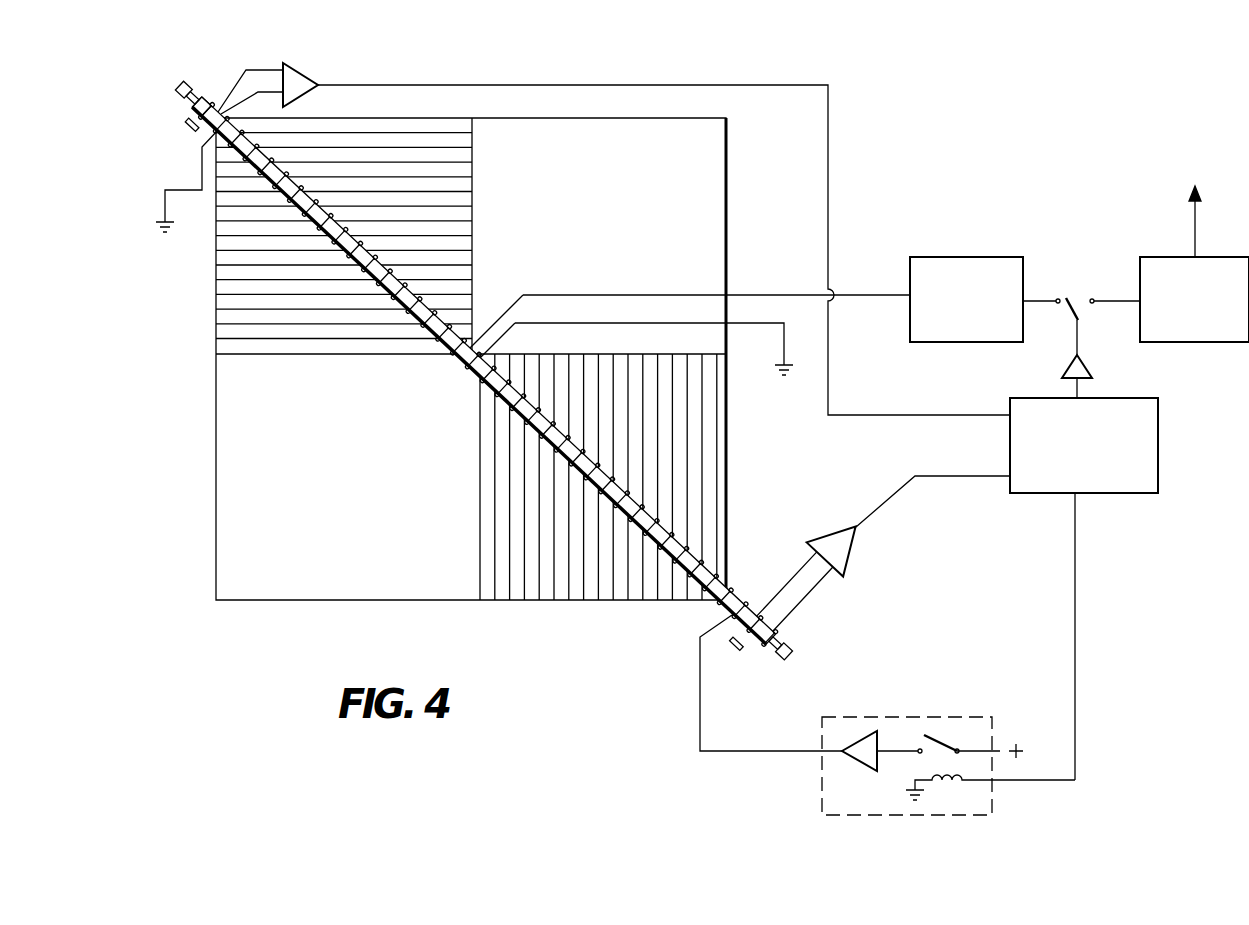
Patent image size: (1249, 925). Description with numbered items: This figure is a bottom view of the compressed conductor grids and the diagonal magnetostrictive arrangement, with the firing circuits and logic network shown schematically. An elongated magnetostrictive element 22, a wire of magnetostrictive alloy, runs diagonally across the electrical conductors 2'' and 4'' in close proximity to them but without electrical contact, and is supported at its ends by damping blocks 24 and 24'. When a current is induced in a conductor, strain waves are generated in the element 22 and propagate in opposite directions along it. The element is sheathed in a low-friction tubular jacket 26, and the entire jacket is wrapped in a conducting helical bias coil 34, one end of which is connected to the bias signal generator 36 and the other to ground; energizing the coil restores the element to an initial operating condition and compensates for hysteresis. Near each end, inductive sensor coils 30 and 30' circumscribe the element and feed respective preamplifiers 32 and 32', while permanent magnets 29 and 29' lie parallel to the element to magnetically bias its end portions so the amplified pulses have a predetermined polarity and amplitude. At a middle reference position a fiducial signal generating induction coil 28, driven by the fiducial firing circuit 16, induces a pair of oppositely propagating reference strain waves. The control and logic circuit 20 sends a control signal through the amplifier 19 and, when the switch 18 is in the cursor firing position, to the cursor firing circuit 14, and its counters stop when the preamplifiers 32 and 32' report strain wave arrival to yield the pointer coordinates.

The cursor firing circuit 14 is at (1190, 343).
The fiducial firing circuit 16 is at (976, 258).
The switch 18 is at (1062, 310).
The amplifier 19 is at (1090, 367).
The control and logic circuit 20 is at (1134, 484).
The magnetostrictive element 22 is at (772, 644).
The damping block 24 is at (812, 659).
The damping block 24' is at (160, 78).
The jacket or sleeve 26 is at (700, 590).
The fiducial signal generating induction coil 28 is at (460, 366).
The permanent magnet 29 is at (727, 667).
The permanent magnet 29' is at (169, 142).
The inductive sensor coil 30 is at (518, 370).
The inductive sensor coil 30' is at (213, 87).
The preamplifier 32 is at (878, 558).
The preamplifier 32' is at (614, 236).
The helical bias coil 34 is at (628, 518).
The bias signal generator 36 is at (994, 812).
The electrical conductor 2'' is at (576, 477).
The electrical conductor 4'' is at (344, 264).